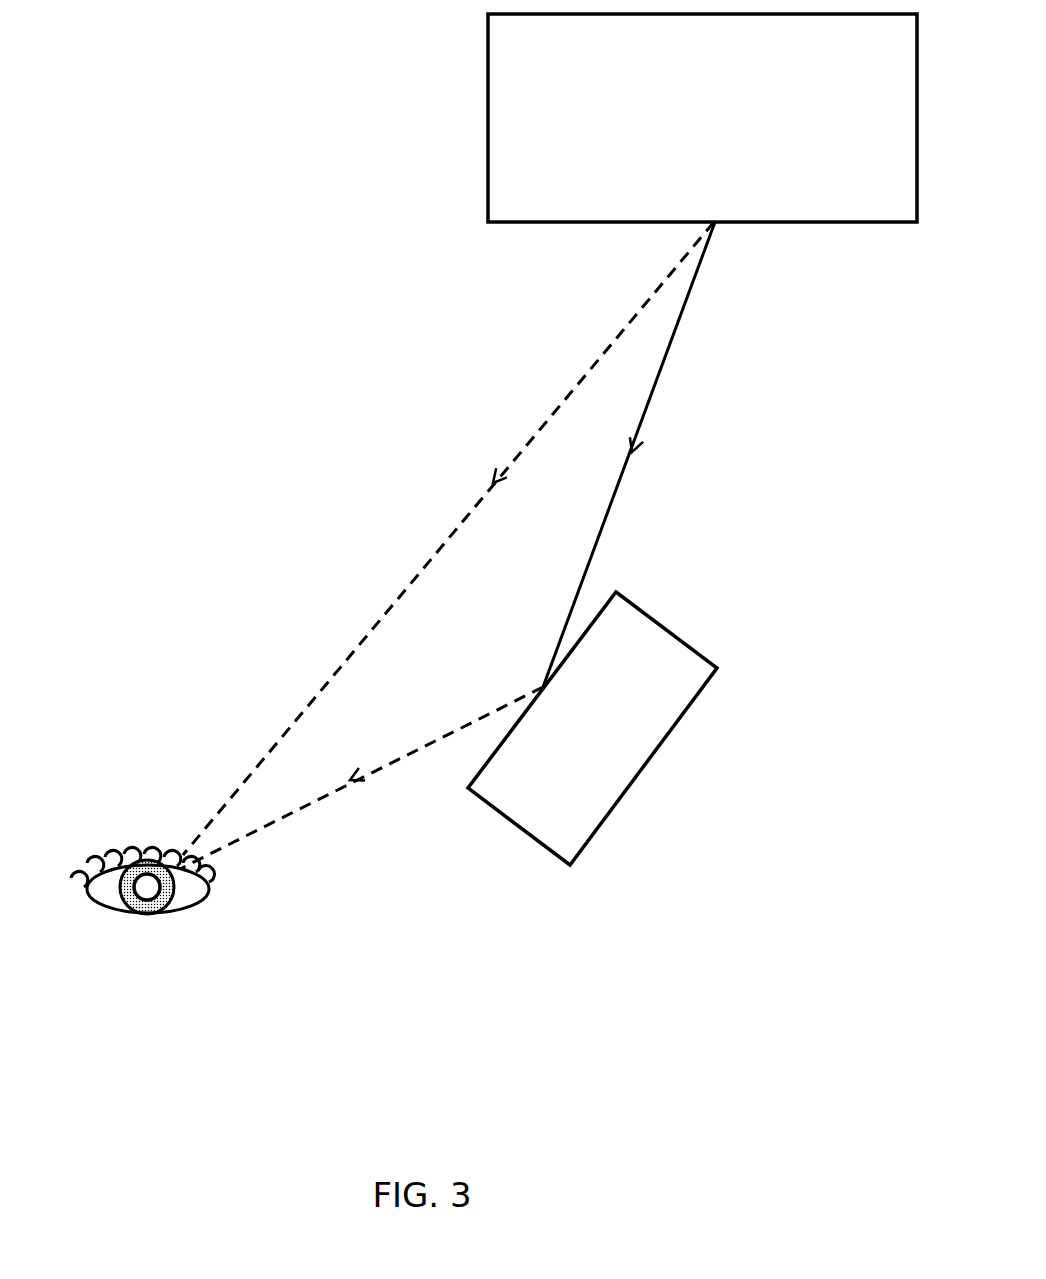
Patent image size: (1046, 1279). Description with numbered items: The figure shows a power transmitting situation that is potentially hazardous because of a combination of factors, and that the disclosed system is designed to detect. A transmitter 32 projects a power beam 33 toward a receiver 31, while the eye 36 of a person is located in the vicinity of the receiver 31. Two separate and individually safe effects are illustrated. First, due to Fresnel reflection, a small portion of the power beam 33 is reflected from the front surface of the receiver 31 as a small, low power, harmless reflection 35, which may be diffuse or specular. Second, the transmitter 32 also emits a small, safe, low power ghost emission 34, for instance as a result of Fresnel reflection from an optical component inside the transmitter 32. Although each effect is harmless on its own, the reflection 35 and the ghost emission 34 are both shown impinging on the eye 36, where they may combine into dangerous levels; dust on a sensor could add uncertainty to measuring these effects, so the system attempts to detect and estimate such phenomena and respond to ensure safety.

The receiver 31 is at (571, 743).
The transmitter 32 is at (682, 138).
The power beam 33 is at (650, 403).
The ghost emission 34 is at (340, 655).
The reflection 35 is at (317, 803).
The eye 36 is at (150, 913).